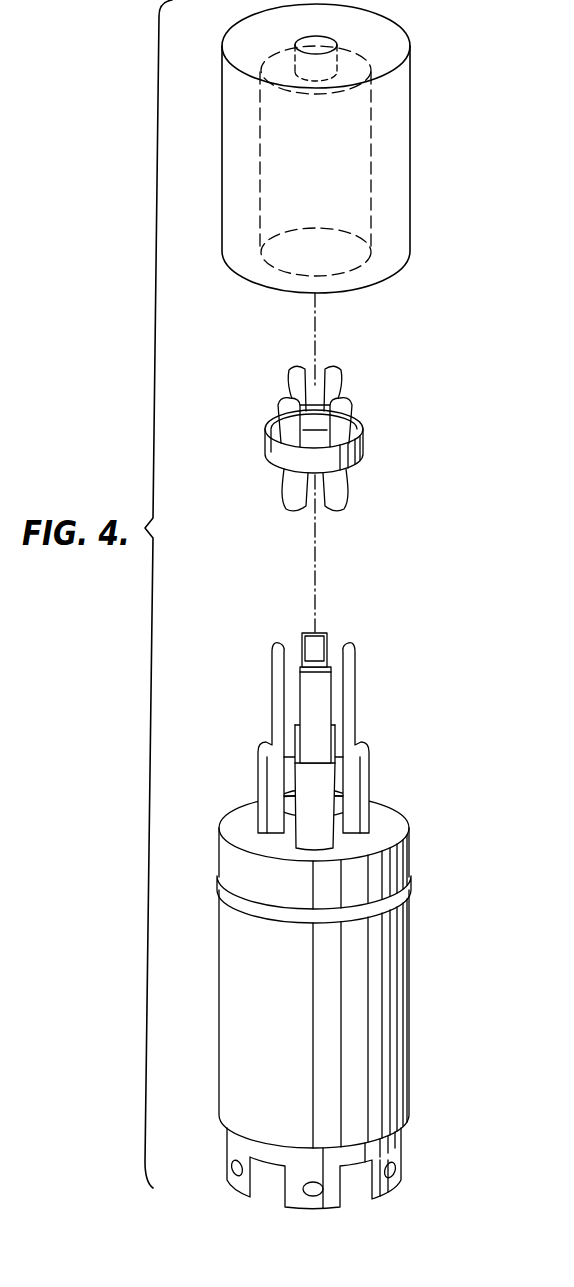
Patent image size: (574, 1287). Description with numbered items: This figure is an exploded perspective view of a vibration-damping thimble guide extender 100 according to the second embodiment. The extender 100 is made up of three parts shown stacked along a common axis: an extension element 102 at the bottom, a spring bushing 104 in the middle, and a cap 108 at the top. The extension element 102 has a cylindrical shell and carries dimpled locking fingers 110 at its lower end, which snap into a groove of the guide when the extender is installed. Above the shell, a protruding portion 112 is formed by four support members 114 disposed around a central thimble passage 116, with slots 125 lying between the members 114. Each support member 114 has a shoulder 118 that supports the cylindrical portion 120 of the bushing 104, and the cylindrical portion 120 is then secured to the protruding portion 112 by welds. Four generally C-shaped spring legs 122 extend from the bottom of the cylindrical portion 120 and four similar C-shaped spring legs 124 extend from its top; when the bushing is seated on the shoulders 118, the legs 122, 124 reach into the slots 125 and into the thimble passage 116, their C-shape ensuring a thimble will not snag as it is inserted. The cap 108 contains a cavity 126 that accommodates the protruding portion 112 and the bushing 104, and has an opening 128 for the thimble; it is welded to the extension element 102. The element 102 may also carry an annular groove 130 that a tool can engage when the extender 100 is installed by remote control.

The extender 100 is at (508, 283).
The extension element 102 is at (294, 1012).
The spring bushing 104 is at (347, 445).
The cap 108 is at (339, 148).
The dimpled locking fingers 110 is at (342, 1197).
The protruding portion 112 is at (300, 763).
The support members 114 is at (262, 771).
The thimble passage 116 is at (331, 603).
The shoulder 118 is at (267, 742).
The cylindrical portion 120 is at (272, 451).
The spring legs 122 is at (343, 509).
The spring legs 124 is at (282, 408).
The slots 125 is at (337, 696).
The cavity 126 is at (372, 210).
The opening 128 is at (311, 40).
The annular groove 130 is at (294, 913).